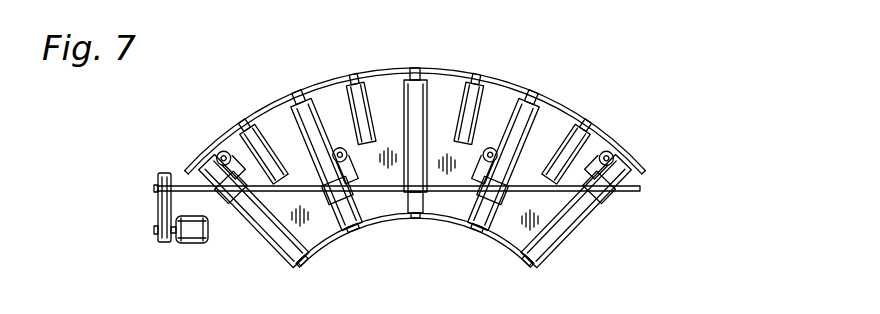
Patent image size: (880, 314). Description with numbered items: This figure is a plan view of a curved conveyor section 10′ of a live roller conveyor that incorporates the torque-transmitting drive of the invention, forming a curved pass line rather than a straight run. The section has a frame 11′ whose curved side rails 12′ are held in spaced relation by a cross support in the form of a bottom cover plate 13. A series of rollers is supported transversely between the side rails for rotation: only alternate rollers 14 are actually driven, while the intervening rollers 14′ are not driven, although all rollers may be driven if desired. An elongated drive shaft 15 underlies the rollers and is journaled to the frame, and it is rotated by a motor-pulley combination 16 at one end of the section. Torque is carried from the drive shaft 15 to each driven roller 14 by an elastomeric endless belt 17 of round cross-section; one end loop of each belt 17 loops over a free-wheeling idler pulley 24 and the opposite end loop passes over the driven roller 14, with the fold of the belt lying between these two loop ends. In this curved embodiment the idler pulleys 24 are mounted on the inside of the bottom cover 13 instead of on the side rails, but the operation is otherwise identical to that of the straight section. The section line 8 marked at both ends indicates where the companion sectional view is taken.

The conveyor section 10′ is at (590, 110).
The frame 11′ is at (453, 70).
The side rail 12′ is at (362, 72).
The bottom cover plate 13 is at (437, 102).
The driven conveyor rollers 14 is at (412, 86).
The rollers 14′ is at (340, 98).
The drive shaft 15 is at (307, 170).
The motor-pulley combination 16 is at (195, 232).
The elastomeric endless belts 17 is at (242, 188).
The idler pulley 24 is at (224, 150).
The section line 8 is at (150, 207).